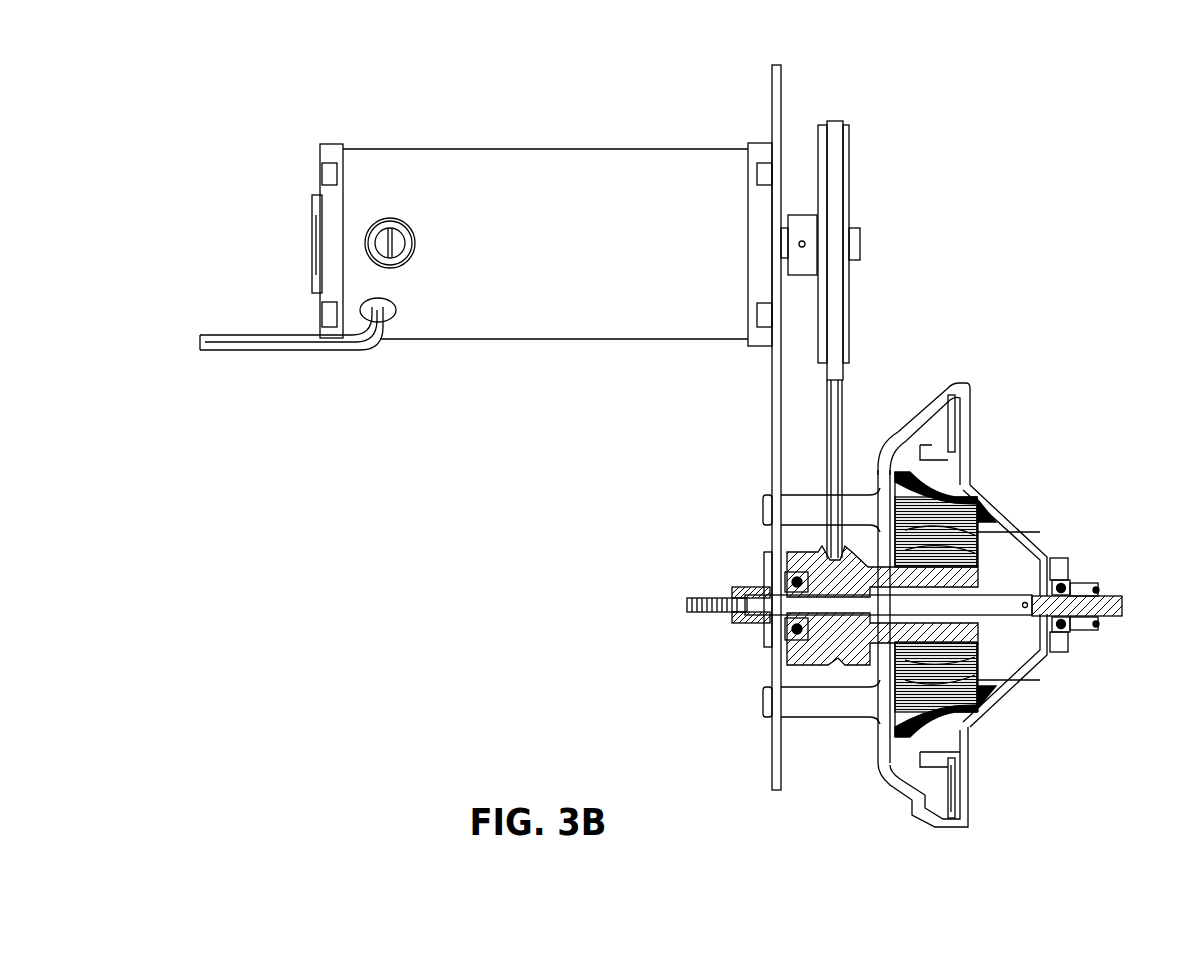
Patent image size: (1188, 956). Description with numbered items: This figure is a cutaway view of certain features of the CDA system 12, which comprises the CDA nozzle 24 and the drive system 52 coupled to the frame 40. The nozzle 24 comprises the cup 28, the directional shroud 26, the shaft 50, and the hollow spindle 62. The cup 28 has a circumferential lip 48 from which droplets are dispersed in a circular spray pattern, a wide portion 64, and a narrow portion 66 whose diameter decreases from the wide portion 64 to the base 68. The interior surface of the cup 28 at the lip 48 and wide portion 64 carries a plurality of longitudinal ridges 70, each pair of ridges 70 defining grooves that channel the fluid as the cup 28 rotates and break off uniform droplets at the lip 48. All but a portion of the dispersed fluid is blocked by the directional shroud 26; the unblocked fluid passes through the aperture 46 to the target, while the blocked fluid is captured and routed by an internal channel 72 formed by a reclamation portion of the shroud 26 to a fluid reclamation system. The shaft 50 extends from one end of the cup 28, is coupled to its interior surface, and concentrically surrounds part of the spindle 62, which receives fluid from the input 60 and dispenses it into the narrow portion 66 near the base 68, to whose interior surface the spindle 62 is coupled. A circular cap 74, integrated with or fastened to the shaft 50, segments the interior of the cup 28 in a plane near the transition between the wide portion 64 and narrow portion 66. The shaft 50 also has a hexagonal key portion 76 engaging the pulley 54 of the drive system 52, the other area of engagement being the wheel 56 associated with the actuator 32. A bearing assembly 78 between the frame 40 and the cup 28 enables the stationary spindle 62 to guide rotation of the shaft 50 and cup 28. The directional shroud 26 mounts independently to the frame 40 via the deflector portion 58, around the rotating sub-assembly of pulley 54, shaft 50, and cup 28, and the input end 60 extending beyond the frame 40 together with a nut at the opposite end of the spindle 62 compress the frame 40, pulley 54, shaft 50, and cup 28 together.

The CDA system 12 is at (1035, 108).
The CDA nozzle 24 is at (621, 667).
The directional shroud 26 is at (952, 381).
The cup 28 is at (1030, 530).
The actuator 32 is at (486, 246).
The frame 40 is at (779, 122).
The aperture 46 is at (873, 791).
The circumferential lip 48 is at (910, 473).
The shaft 50 is at (955, 573).
The drive system 52 is at (718, 392).
The pulley 54 is at (840, 448).
The wheel 56 is at (838, 168).
The deflector portion 58 is at (915, 405).
The input 60 is at (657, 607).
The spindle 62 is at (1103, 618).
The wide portion 64 is at (955, 723).
The narrow portion 66 is at (1023, 680).
The base 68 is at (1069, 566).
The longitudinal ridges 70 is at (968, 497).
The internal channel 72 is at (950, 792).
The circular cap 74 is at (975, 690).
The hexagonal key portion 76 is at (857, 653).
The bearing assembly 78 is at (795, 633).